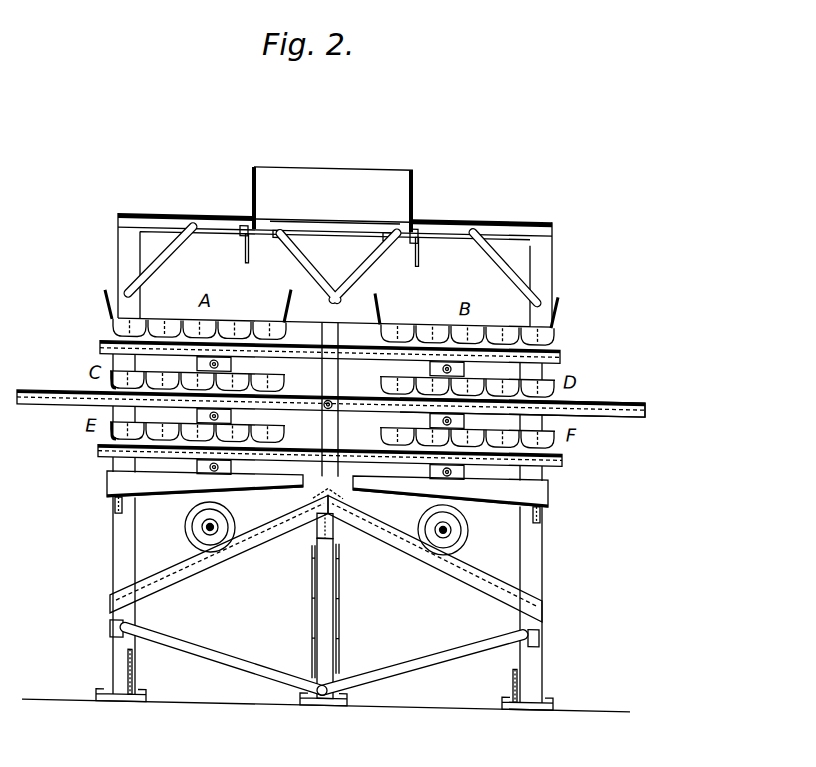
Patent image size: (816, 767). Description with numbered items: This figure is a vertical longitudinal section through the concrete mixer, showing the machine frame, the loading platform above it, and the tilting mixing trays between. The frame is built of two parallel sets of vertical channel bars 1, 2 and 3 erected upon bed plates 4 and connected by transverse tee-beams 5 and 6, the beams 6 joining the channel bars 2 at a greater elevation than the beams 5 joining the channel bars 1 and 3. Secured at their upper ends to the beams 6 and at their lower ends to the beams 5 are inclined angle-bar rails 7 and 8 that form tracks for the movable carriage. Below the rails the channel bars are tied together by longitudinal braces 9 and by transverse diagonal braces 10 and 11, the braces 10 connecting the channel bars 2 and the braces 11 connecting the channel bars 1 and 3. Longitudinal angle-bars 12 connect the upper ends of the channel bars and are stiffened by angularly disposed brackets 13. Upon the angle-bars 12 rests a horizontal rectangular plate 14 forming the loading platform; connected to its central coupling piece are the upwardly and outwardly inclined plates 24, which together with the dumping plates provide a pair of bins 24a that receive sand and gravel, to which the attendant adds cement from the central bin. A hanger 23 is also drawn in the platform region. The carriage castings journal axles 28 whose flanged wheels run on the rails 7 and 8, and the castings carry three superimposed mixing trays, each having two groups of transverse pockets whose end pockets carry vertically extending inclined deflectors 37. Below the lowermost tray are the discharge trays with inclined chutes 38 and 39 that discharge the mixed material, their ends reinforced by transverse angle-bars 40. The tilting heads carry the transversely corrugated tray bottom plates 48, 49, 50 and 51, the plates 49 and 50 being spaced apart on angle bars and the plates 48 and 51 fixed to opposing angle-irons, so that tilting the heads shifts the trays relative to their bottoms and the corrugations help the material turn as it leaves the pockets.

The channel bar 1 is at (543, 660).
The channel bar 2 is at (320, 639).
The channel bar 3 is at (115, 667).
The bed plate 4 is at (115, 704).
The tee-beam 5 is at (115, 640).
The tee-beam 6 is at (336, 533).
The rail 7 is at (223, 560).
The rail 8 is at (452, 575).
The longitudinal brace 9 is at (215, 654).
The diagonal brace 10 is at (312, 585).
The diagonal brace 11 is at (133, 682).
The angle-bar 12 is at (433, 230).
The bracket 13 is at (166, 266).
The plate 14 is at (176, 221).
The hanger bars 23 is at (248, 252).
The inclined plate 24 is at (415, 176).
The bin 24a is at (335, 211).
The axle 28 is at (206, 535).
The deflector 37 is at (288, 300).
The inclined chute 38 is at (502, 503).
The inclined chute 39 is at (168, 500).
The angle-bar 40 is at (120, 512).
The tray bottom plate 48 is at (224, 330).
The tray bottom plate 49 is at (597, 398).
The tray bottom plate 50 is at (60, 397).
The tray bottom plate 51 is at (362, 448).